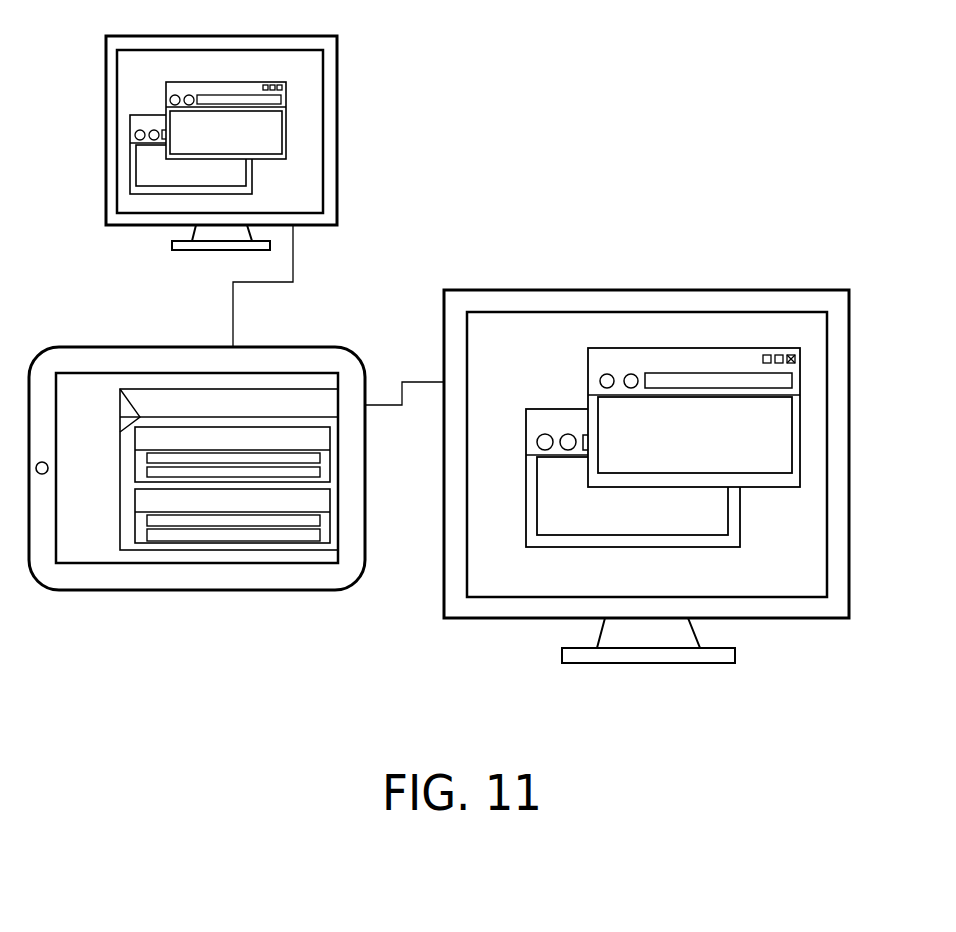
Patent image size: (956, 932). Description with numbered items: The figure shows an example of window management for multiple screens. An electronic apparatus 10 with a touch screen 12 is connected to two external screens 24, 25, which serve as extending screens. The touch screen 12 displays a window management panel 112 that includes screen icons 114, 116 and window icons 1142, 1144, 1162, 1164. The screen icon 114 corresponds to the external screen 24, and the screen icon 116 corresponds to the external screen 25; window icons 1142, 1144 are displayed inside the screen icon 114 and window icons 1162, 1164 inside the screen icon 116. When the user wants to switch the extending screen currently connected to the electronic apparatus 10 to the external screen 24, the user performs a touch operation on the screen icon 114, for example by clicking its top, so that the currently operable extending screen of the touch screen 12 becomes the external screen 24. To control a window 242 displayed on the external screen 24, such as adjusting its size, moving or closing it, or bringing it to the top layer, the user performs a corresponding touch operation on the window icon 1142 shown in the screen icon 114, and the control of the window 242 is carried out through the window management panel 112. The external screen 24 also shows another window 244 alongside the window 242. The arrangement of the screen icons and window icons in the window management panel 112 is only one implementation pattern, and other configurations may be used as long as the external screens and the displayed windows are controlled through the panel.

The electronic apparatus 10 is at (110, 591).
The touch screen 12 is at (162, 563).
The window management panel 112 is at (218, 550).
The screen icon 114 is at (330, 442).
The window icon 1142 is at (320, 457).
The window icon 1144 is at (320, 471).
The screen icon 116 is at (324, 550).
The window icon 1162 is at (320, 518).
The window icon 1164 is at (320, 533).
The external screen 24 is at (487, 610).
The window 242 is at (667, 348).
The window D 244 is at (555, 409).
The external screen 25 is at (337, 143).